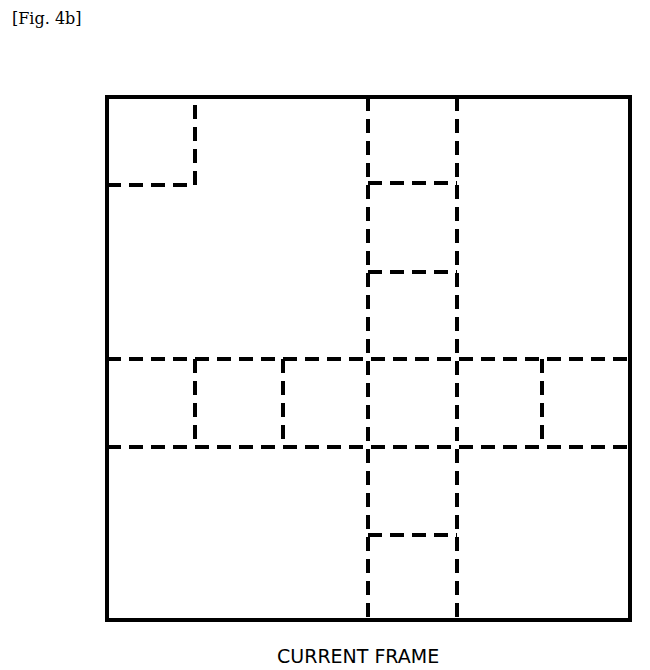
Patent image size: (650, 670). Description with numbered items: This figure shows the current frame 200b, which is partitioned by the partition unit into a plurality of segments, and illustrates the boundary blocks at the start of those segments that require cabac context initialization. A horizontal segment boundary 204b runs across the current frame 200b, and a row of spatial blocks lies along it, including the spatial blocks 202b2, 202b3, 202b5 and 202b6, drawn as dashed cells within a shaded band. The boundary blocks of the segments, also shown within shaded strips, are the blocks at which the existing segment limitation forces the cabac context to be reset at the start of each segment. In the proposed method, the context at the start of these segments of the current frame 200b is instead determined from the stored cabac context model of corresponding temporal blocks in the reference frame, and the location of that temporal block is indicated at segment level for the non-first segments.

The current frame 200b is at (230, 112).
The segment boundary 204b is at (152, 359).
The spatial block 202b2 is at (268, 420).
The spatial block 202b3 is at (355, 420).
The spatial block 202b5 is at (530, 420).
The spatial block 202b6 is at (618, 420).